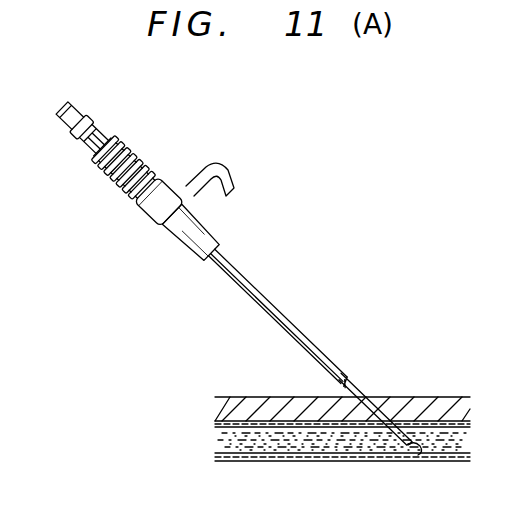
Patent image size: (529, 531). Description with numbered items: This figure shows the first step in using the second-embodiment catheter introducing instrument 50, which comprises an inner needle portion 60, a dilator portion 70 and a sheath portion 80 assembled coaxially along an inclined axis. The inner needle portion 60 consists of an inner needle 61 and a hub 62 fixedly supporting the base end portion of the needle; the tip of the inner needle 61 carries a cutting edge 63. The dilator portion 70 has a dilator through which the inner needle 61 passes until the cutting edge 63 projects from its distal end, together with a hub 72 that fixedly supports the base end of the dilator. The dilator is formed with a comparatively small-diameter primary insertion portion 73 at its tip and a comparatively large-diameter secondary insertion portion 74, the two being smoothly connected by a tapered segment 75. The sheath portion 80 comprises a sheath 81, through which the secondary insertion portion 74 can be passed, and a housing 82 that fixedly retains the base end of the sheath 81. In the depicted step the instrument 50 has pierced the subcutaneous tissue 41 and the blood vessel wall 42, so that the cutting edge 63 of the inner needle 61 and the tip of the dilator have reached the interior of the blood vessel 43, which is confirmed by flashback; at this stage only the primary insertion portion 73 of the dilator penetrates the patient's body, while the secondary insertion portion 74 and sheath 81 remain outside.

The inner needle portion 60 is at (92, 100).
The hub 62 is at (74, 126).
The dilator portion 70 is at (158, 168).
The hub 72 is at (124, 178).
The housing 82 is at (150, 220).
The sheath portion 80 is at (222, 247).
The catheter introducing instrument 50 is at (190, 257).
The sheath 81 is at (280, 316).
The secondary insertion portion 74 is at (344, 374).
The tapered segment 75 is at (360, 392).
The primary insertion portion 73 is at (395, 418).
The subcutaneous tissue 41 is at (245, 400).
The blood vessel wall 42 is at (214, 422).
The blood vessel 43 is at (286, 446).
The inner needle 61 is at (400, 460).
The cutting edge 63 is at (414, 450).